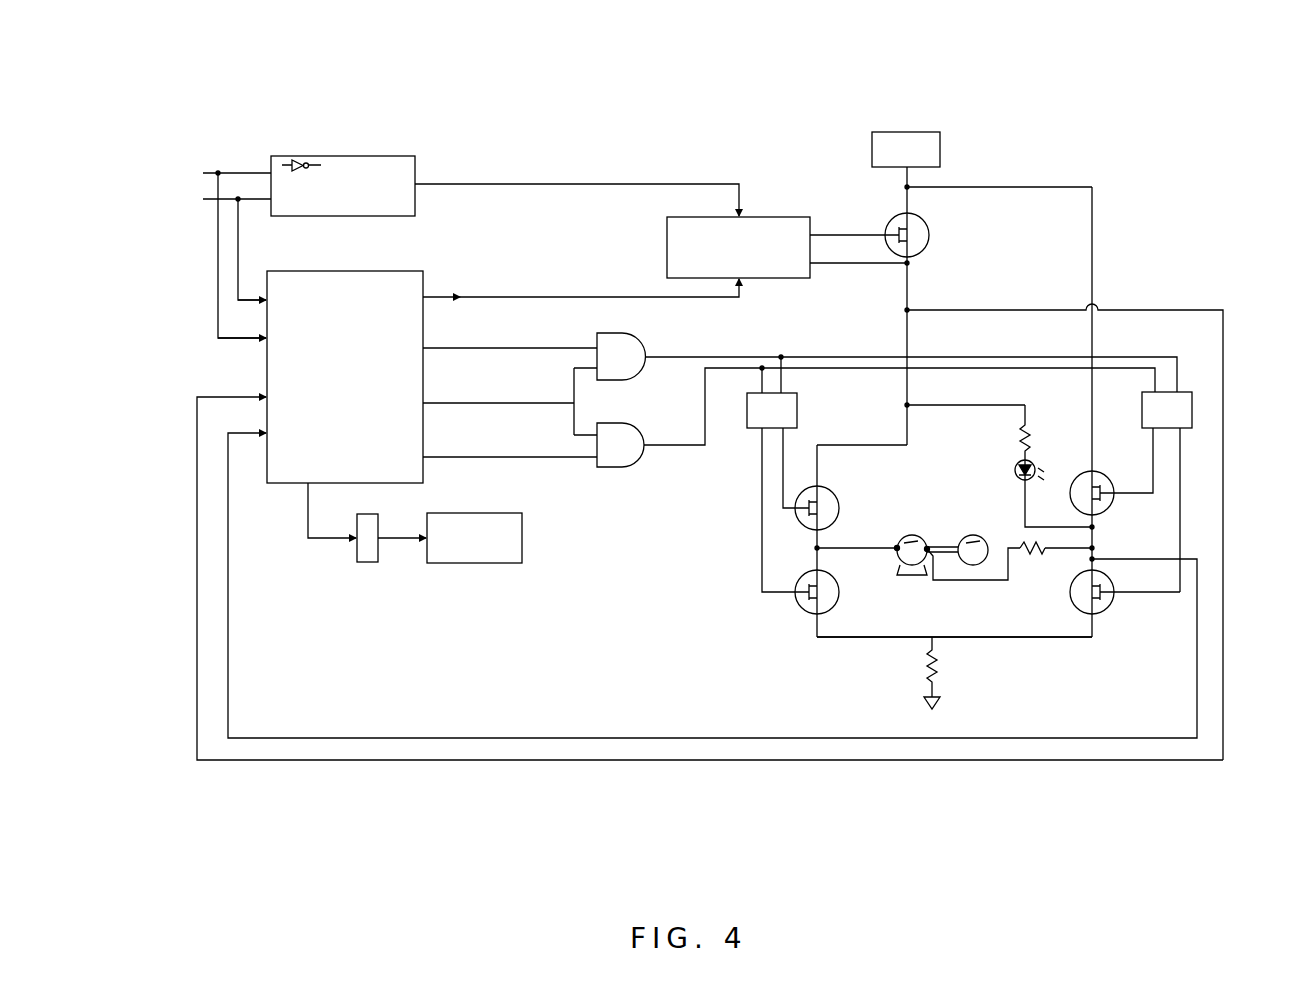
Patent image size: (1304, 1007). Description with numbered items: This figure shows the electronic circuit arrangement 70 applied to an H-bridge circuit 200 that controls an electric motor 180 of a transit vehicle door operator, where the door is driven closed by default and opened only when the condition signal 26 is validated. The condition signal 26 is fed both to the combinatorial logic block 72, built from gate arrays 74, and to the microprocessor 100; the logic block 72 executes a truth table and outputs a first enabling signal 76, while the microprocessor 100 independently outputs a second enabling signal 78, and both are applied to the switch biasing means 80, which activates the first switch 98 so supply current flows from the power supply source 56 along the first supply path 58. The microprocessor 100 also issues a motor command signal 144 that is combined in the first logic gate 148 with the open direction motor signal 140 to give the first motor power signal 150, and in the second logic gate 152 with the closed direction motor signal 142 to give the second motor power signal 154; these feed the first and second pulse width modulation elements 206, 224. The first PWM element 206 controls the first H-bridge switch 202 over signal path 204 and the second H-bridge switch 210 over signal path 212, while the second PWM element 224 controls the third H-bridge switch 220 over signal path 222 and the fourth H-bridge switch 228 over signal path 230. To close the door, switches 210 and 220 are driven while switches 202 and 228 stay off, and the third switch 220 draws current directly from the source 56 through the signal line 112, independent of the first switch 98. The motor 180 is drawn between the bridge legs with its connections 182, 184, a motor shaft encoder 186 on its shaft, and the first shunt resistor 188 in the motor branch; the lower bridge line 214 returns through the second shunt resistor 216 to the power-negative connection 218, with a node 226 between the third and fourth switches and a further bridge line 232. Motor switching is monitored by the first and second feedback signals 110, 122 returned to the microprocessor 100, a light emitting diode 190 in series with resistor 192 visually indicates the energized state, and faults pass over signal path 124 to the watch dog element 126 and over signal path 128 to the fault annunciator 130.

The condition signal 26 is at (236, 173).
The electrical power supply source 56 is at (940, 132).
The first supply path 58 is at (903, 179).
The electronic circuit arrangement 70 is at (577, 104).
The combinatorial logic block 72 is at (383, 156).
The gate arrays 74 is at (306, 160).
The first enabling signal 76 is at (563, 182).
The second enabling signal 78 is at (556, 295).
The switch biasing means 80 is at (667, 250).
The first switch 98 is at (893, 219).
The microprocessor 100 is at (374, 363).
The first feedback signal 110 is at (1200, 310).
The signal line 112 is at (1092, 243).
The second feedback signal 122 is at (1097, 738).
The signal path 124 is at (301, 518).
The watch dog element 126 is at (362, 552).
The signal path 128 is at (400, 538).
The fault annunciator 130 is at (488, 563).
The first motor direction signal 140 is at (556, 348).
The second motor direction signal 142 is at (540, 458).
The motor command signal 144 is at (546, 403).
The first logic gate 148 is at (627, 324).
The first motor power signal 150 is at (865, 355).
The second logic gate 152 is at (625, 468).
The second motor power signal 154 is at (708, 428).
The electric motor 180 is at (912, 566).
The motor terminal 182 is at (895, 551).
The motor terminal 184 is at (928, 547).
The motor shaft encoder 186 is at (973, 565).
The first shunt resistor 188 is at (1022, 572).
The light emitting diode 190 is at (1013, 470).
The resistor 192 is at (1020, 438).
The H-bridge circuit 200 is at (872, 778).
The first H-bridge switch 202 is at (850, 480).
The signal path 204 is at (783, 476).
The first pulse width modulation element 206 is at (797, 418).
The second H-bridge switch 210 is at (808, 612).
The signal path 212 is at (762, 532).
The bottom line 214 is at (880, 640).
The second shunt resistor 216 is at (940, 660).
The power negative ground 218 is at (940, 703).
The third H-bridge switch 220 is at (1108, 472).
The signal path 222 is at (1153, 475).
The second pulse width modulation element 224 is at (1192, 412).
The node line 226 is at (1095, 535).
The fourth H-bridge switch 228 is at (1100, 615).
The signal path 230 is at (1180, 532).
The line 232 is at (1042, 640).